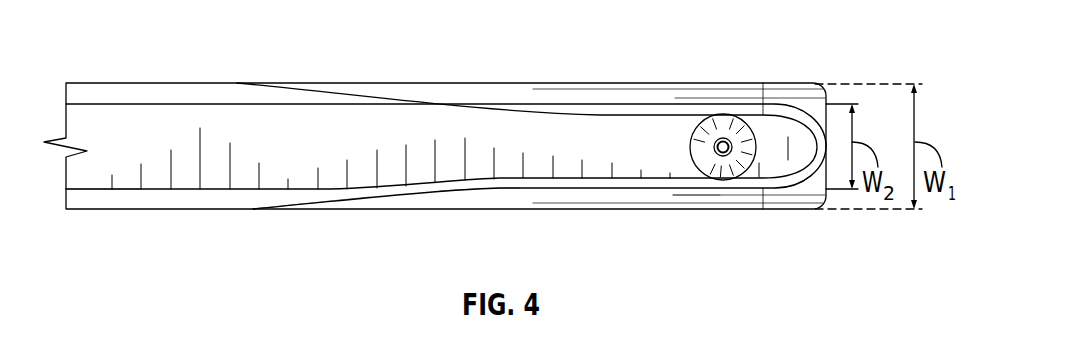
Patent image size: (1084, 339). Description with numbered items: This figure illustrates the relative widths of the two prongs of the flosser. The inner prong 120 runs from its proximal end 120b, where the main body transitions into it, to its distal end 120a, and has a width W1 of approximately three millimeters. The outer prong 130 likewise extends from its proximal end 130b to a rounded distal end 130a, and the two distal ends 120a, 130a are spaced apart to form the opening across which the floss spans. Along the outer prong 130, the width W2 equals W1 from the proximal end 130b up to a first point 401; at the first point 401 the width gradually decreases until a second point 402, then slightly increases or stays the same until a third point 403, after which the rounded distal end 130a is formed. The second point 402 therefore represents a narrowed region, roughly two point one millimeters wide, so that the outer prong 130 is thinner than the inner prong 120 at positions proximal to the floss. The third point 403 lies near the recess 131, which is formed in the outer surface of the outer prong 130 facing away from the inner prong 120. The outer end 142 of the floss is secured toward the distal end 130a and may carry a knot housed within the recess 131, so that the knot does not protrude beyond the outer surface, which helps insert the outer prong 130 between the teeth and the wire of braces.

The inner prong 120 is at (482, 93).
The distal end of inner prong 120a is at (829, 118).
The proximal end of inner prong 120b is at (321, 75).
The outer prong 130 is at (224, 167).
The distal end of outer prong 130a is at (840, 153).
The proximal end of outer prong 130b is at (130, 180).
The recess 131 is at (722, 170).
The outer end of floss 142 is at (722, 142).
The first point 401 is at (240, 211).
The second point 402 is at (498, 185).
The third point 403 is at (662, 198).